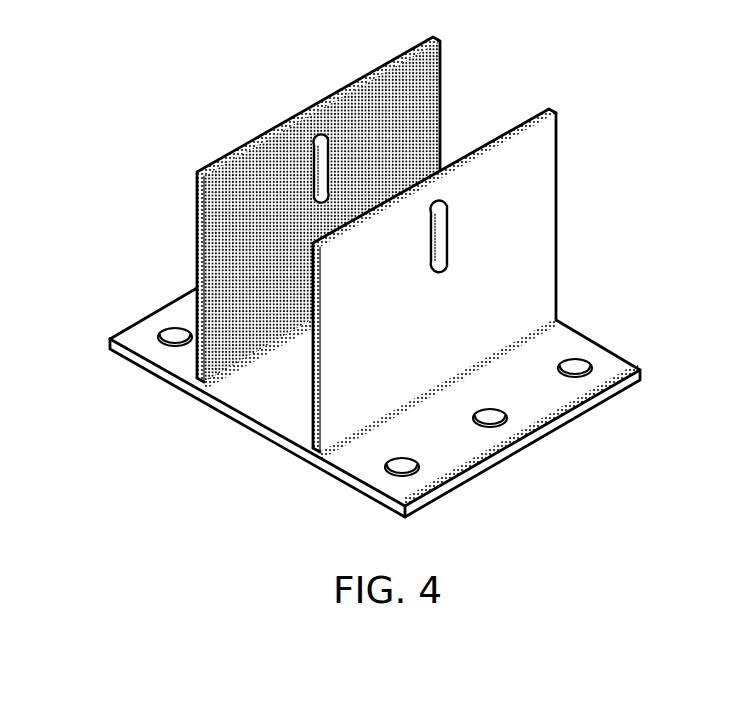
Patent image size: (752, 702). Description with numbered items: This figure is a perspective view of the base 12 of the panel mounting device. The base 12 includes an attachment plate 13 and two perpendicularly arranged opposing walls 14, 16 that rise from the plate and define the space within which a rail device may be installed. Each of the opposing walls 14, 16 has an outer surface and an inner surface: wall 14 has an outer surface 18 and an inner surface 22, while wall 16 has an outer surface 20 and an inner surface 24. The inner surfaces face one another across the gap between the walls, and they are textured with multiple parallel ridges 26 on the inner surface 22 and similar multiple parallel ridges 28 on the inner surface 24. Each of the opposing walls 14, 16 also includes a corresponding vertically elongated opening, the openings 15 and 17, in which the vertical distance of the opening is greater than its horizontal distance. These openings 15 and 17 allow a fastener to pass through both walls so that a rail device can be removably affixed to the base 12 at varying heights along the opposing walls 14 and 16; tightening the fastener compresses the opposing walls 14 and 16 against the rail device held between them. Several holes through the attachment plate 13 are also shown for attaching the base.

The base 12 is at (346, 278).
The attachment plate 13 is at (452, 450).
The opposing wall 14 is at (266, 237).
The vertically elongated opening 15 is at (430, 262).
The opposing wall 16 is at (433, 291).
The vertically elongated opening 17 is at (318, 132).
The outer surface 18 is at (195, 322).
The outer surface 20 is at (525, 263).
The inner surface 22 is at (245, 247).
The inner surface 24 is at (312, 392).
The parallel ridges 26 is at (232, 284).
The parallel ridges 28 is at (312, 358).